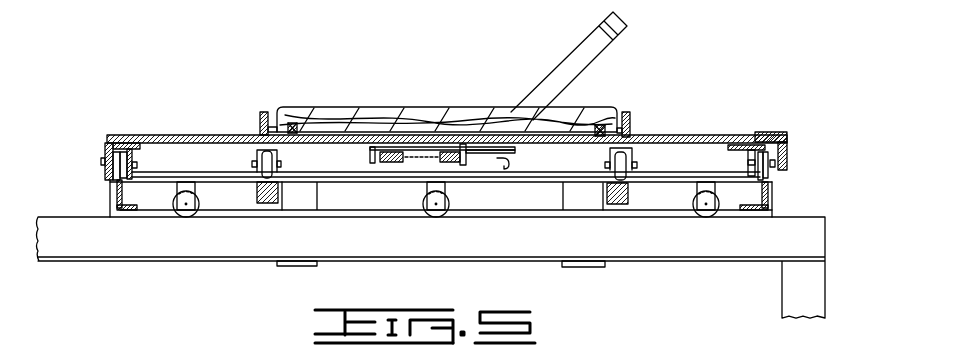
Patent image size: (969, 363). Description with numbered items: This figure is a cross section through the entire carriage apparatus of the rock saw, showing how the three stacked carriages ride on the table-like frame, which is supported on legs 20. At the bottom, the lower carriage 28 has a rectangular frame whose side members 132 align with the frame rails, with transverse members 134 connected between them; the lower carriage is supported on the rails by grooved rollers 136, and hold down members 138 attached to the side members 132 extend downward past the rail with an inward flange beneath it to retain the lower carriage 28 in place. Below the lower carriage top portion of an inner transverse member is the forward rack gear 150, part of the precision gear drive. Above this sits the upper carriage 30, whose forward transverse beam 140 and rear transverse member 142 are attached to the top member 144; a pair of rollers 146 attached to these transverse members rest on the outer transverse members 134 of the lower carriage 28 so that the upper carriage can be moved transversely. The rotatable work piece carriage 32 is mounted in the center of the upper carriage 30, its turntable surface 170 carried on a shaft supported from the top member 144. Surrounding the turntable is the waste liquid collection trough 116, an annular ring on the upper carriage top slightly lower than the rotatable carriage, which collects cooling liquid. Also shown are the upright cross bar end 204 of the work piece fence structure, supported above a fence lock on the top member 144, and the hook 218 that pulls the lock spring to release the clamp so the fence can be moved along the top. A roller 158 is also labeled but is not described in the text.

The legs 20 is at (783, 283).
The lower carriage 28 is at (86, 206).
The upper carriage 30 is at (177, 122).
The work piece carriage 32 is at (323, 101).
The waste liquid collection trough 116 is at (632, 118).
The side members 132 is at (387, 200).
The transverse members 134 is at (117, 197).
The rollers 136 is at (183, 217).
The hold down members 138 is at (295, 264).
The forward transverse beam 140 is at (788, 143).
The rear transverse member 142 is at (106, 155).
The top member 144 is at (686, 136).
The rollers 146 is at (147, 110).
The forward rack gear 150 is at (270, 205).
The hanger roller 158 is at (634, 167).
The turntable surface 170 is at (427, 88).
The upright cross bar end 204 is at (583, 48).
The hook 218 is at (510, 160).